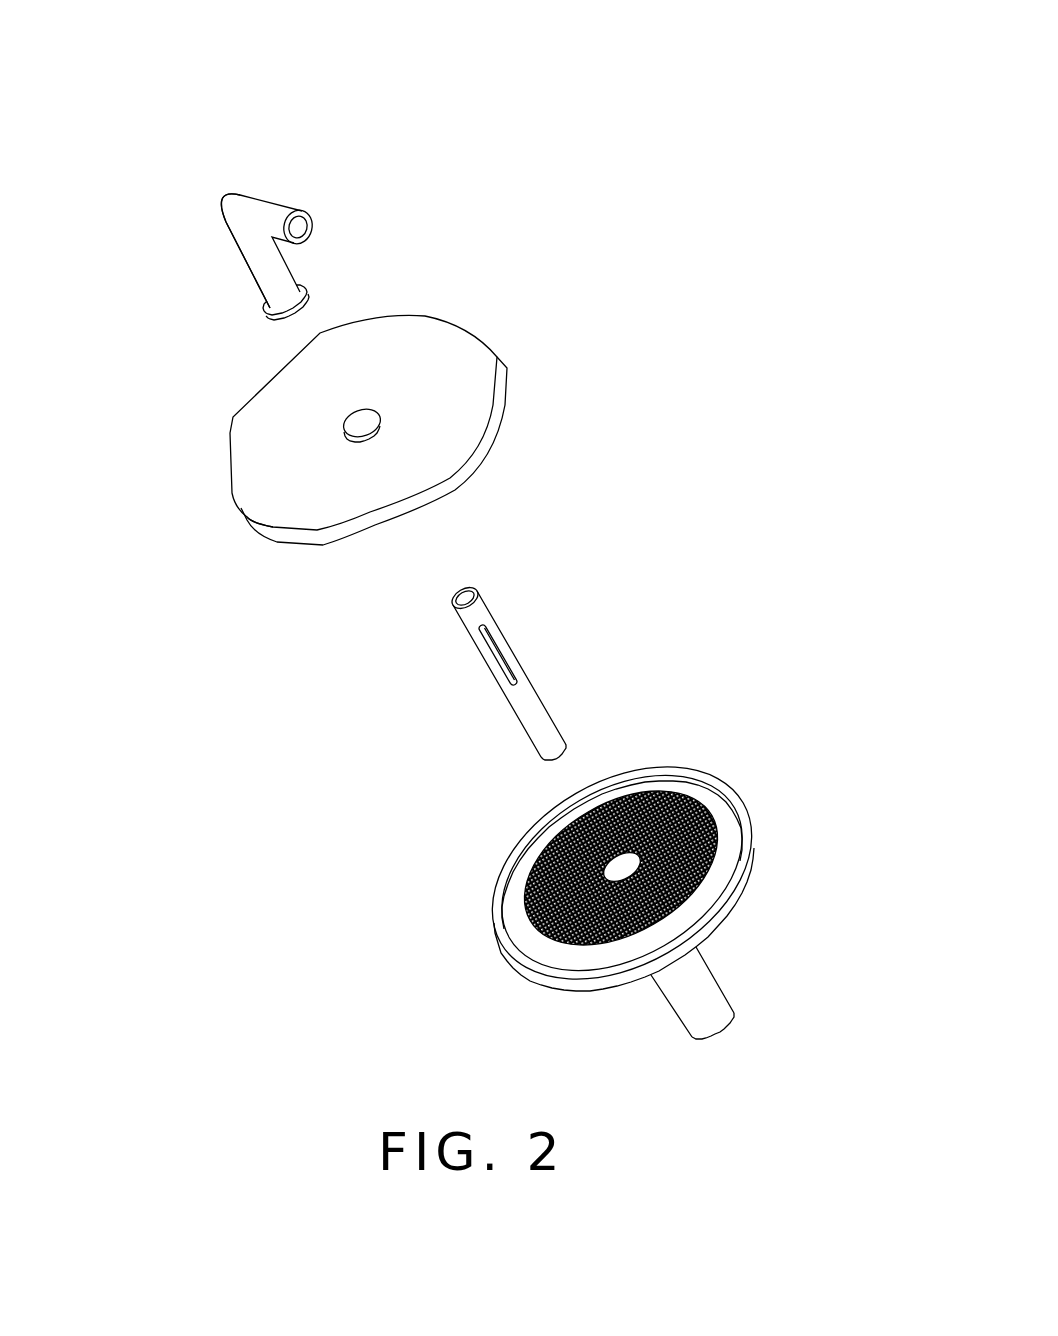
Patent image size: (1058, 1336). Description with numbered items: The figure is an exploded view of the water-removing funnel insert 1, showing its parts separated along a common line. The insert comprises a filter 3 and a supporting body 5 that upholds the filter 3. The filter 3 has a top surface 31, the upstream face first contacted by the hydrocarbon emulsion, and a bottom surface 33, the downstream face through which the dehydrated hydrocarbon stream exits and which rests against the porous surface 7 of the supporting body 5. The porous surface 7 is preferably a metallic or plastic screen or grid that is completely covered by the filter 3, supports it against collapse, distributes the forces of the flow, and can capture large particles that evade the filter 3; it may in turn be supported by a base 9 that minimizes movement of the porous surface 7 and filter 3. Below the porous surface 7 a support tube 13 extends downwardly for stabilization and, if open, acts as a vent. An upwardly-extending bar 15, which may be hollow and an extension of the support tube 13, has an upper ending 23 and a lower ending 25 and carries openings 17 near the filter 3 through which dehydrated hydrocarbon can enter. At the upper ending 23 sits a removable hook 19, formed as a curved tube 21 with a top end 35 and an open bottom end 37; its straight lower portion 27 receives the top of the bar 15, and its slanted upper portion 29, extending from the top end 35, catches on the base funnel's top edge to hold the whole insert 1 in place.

The water-removing funnel insert 1 is at (747, 322).
The filter 3 is at (232, 445).
The supporting body 5 is at (513, 987).
The porous surface 7 is at (713, 812).
The base 9 is at (598, 978).
The support tube 13 is at (713, 968).
The upwardly-extending bar 15 is at (507, 635).
The openings 17 is at (503, 675).
The hook 19 is at (214, 231).
The curved tube 21 is at (232, 195).
The upper ending 23 is at (450, 608).
The lower ending 25 is at (565, 755).
The lower portion 27 is at (243, 258).
The slanted upper portion 29 is at (274, 207).
The top surface 31 is at (270, 497).
The bottom surface 33 is at (487, 448).
The top end 35 is at (312, 223).
The open bottom end 37 is at (313, 295).